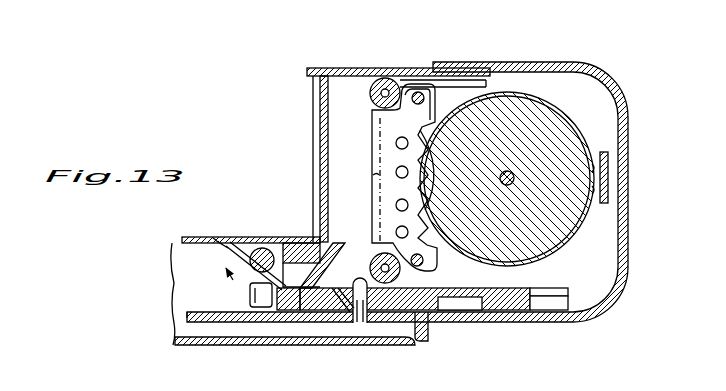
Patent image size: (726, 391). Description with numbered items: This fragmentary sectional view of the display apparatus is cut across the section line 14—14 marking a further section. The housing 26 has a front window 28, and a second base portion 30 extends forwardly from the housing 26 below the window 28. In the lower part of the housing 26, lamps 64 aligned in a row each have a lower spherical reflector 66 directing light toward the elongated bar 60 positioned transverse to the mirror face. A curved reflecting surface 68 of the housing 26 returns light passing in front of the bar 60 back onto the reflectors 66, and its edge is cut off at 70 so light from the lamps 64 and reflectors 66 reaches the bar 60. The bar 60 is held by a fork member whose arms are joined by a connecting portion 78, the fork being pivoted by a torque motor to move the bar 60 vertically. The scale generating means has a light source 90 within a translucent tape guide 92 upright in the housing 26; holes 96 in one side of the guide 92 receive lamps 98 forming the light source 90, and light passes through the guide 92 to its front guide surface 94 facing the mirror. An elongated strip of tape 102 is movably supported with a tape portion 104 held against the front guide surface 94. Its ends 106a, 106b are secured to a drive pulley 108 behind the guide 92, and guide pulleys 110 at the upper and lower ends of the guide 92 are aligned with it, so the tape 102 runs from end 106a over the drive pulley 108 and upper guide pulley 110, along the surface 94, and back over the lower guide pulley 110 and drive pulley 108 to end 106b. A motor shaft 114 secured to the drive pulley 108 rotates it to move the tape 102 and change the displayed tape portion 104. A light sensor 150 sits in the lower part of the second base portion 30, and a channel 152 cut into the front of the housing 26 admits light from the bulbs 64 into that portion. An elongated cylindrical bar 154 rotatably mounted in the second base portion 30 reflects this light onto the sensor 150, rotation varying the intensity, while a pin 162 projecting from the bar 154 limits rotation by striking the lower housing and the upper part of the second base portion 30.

The section line 14- 14 is at (345, 35).
The housing 26 is at (614, 88).
The front window 28 is at (313, 126).
The second base portion 30 is at (196, 240).
The elongated bar 60 is at (373, 175).
The lamps 64 is at (380, 293).
The lower spherical reflector 66 is at (335, 300).
The curved reflecting surface 68 is at (329, 265).
The cut off edge 70 is at (354, 230).
The connecting portion 78 is at (608, 172).
The light source 90 is at (390, 150).
The translucent tape guide 92 is at (403, 135).
The front guide surface 94 is at (349, 213).
The aligned holes 96 is at (418, 145).
The lamps 98 is at (400, 207).
The strip of tape 102 is at (478, 76).
The tape portion 104 is at (368, 130).
The tape end 106a is at (592, 168).
The tape end 106b is at (592, 190).
The drive pulley 108 is at (506, 139).
The guide pulleys 110 is at (370, 90).
The rotatably driven shaft 114 is at (500, 181).
The light sensor 150 is at (252, 302).
The channel 152 is at (300, 250).
The elongated cylindrical bar 154 is at (278, 287).
The pin 162 is at (282, 300).